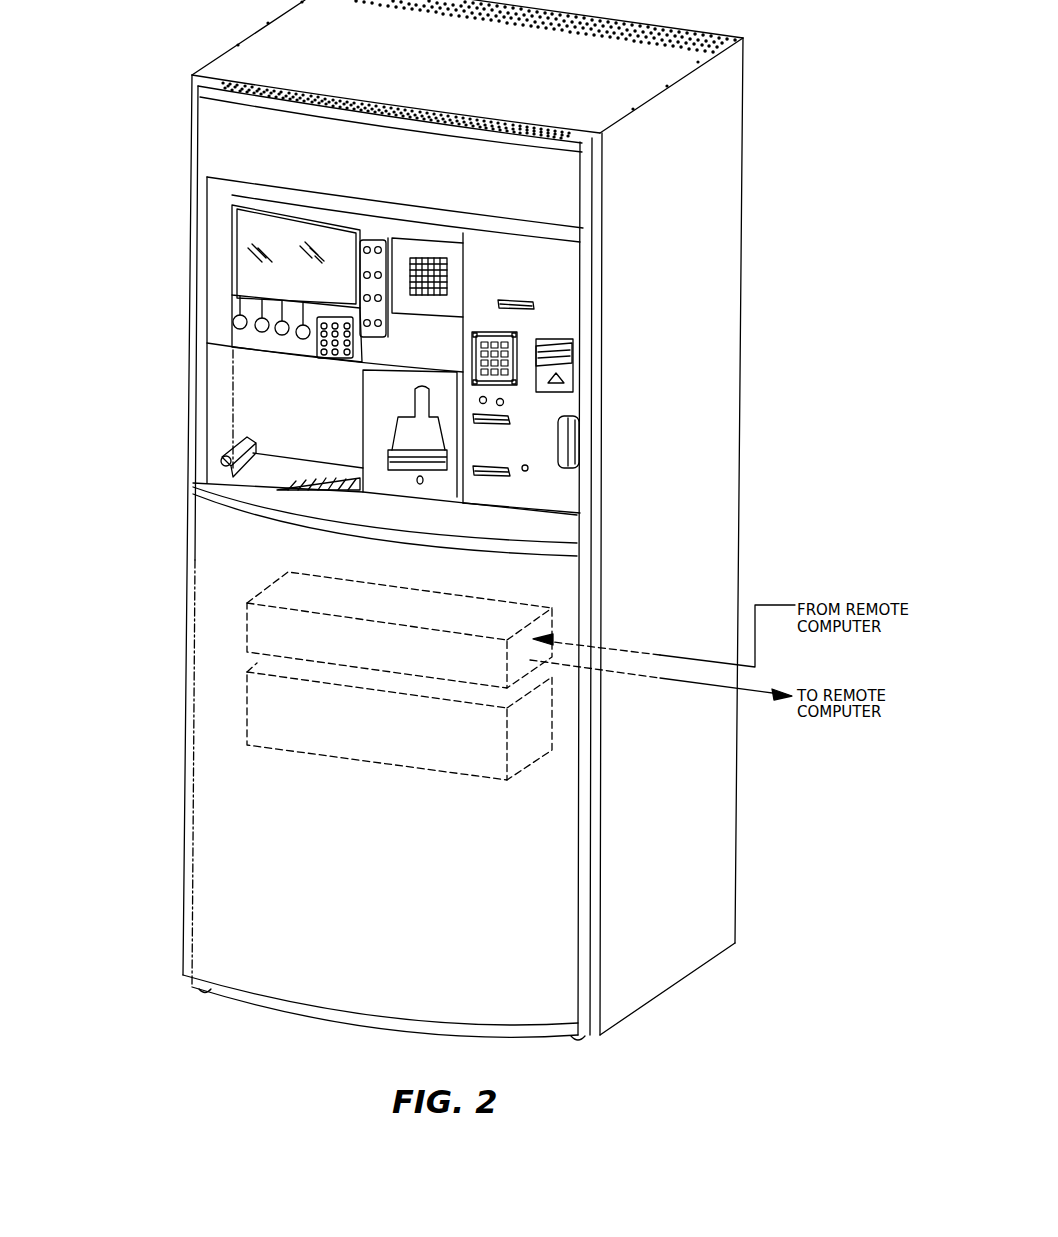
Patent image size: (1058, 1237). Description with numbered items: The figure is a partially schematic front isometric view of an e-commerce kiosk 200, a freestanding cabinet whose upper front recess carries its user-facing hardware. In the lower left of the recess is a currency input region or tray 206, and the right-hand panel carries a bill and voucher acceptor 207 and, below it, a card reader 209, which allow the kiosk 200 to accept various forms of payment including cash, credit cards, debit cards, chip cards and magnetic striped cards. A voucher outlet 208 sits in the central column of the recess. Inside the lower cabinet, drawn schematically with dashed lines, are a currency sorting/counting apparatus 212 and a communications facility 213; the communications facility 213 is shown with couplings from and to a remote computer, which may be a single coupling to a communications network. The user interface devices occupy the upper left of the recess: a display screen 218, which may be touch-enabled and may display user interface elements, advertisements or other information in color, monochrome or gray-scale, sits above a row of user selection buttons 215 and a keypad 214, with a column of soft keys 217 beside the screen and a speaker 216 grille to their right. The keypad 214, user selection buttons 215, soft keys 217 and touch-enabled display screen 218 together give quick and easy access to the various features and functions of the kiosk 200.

The e-commerce kiosk 200 is at (141, 911).
The currency input region or tray 206 is at (228, 449).
The bill and voucher acceptor 207 is at (560, 339).
The voucher outlet 208 is at (397, 428).
The card reader 209 is at (568, 417).
The currency sorting/counting apparatus 212 is at (242, 707).
The communications facility 213 is at (242, 627).
The keypad 214 is at (328, 318).
The user selection buttons 215 is at (233, 323).
The speaker 216 is at (440, 258).
The soft keys 217 is at (373, 243).
The display screen 218 is at (262, 228).